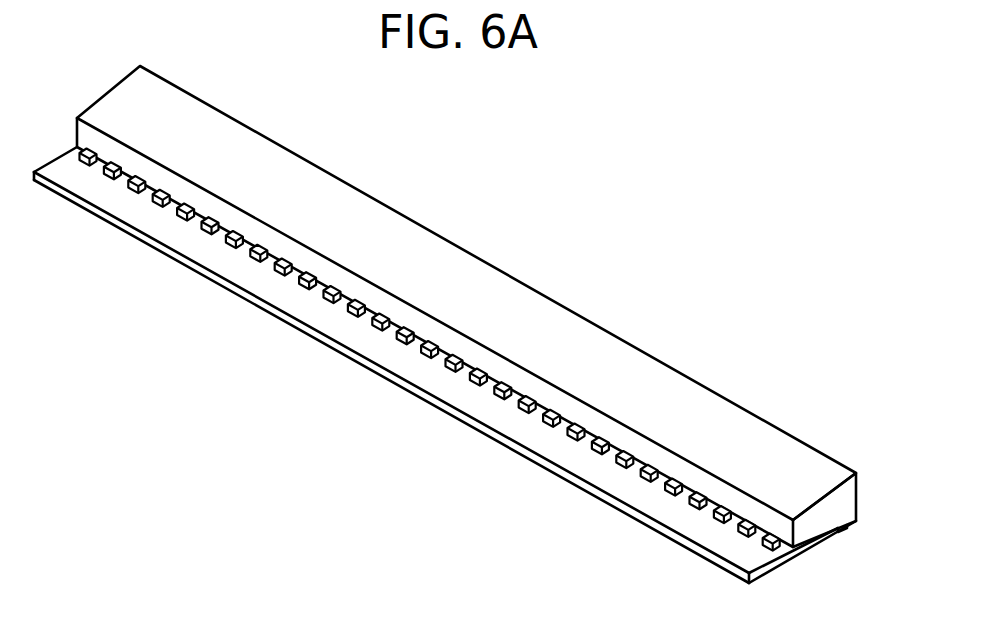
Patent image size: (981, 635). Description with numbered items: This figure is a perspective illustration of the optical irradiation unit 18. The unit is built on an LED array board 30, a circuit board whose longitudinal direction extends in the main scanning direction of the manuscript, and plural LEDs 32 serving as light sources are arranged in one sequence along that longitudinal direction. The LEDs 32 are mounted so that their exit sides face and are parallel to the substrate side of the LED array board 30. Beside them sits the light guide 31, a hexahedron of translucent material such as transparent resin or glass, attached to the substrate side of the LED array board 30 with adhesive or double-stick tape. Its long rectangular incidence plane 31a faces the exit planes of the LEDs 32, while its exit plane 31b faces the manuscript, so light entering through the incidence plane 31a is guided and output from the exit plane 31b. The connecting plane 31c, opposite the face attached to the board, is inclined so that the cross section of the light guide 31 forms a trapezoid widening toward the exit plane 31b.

The optical irradiation unit 18 is at (557, 222).
The LED array board 30 is at (532, 438).
The light guide 31 is at (690, 362).
The incidence plane 31a is at (792, 529).
The exit plane 31b is at (858, 492).
The connecting plane 31c is at (588, 328).
The LEDs 32 is at (401, 341).